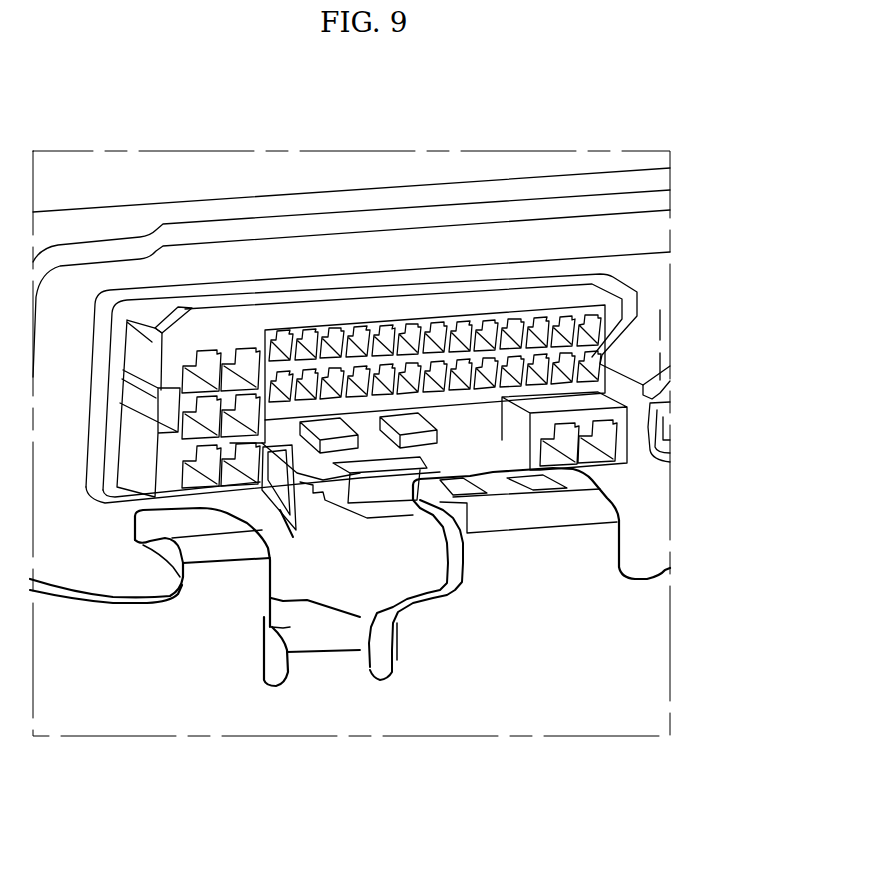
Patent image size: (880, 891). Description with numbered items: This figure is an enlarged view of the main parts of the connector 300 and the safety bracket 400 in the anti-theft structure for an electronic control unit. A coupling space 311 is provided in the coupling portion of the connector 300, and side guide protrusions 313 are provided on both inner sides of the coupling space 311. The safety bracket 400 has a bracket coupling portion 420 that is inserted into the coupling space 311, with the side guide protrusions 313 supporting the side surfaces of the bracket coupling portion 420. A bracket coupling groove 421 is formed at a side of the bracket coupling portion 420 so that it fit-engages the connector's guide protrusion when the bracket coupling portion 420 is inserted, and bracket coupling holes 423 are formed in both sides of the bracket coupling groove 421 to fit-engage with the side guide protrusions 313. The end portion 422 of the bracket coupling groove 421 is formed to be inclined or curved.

The connector 300 is at (582, 293).
The coupling space 311 is at (417, 345).
The side guide protrusions 313 is at (330, 430).
The safety bracket 400 is at (497, 603).
The bracket coupling portion 420 is at (437, 513).
The bracket coupling groove 421 is at (552, 497).
The end portion 422 is at (493, 473).
The bracket coupling holes 423 is at (440, 537).